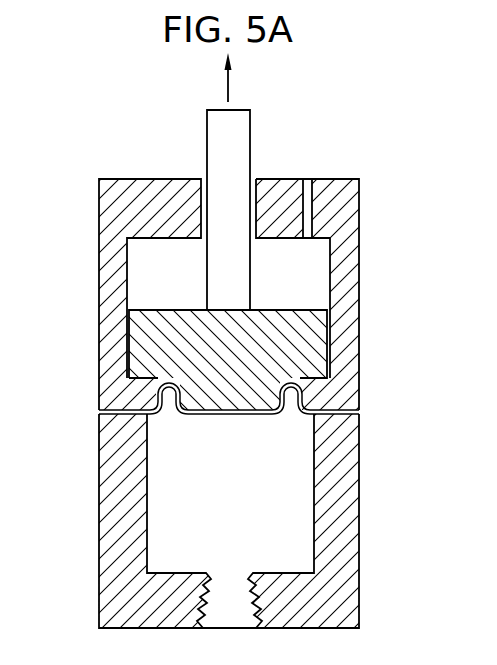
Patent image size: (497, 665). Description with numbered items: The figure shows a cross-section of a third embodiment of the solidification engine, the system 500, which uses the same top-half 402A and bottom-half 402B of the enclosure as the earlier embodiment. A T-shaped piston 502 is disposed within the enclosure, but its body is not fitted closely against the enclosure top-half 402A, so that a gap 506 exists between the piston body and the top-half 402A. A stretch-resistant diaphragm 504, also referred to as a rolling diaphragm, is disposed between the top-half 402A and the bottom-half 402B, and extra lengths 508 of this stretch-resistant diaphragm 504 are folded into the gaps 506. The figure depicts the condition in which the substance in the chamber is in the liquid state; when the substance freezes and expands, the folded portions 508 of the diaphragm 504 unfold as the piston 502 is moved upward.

The system 500 is at (394, 145).
The top-half of the enclosure 402A is at (360, 217).
The bottom-half of the enclosure 402B is at (361, 453).
The piston 502 is at (180, 343).
The stretch-resistant diaphragm 504 is at (330, 406).
The gap 506 is at (164, 410).
The extra lengths of the stretch-resistant diaphragm 508 is at (288, 408).